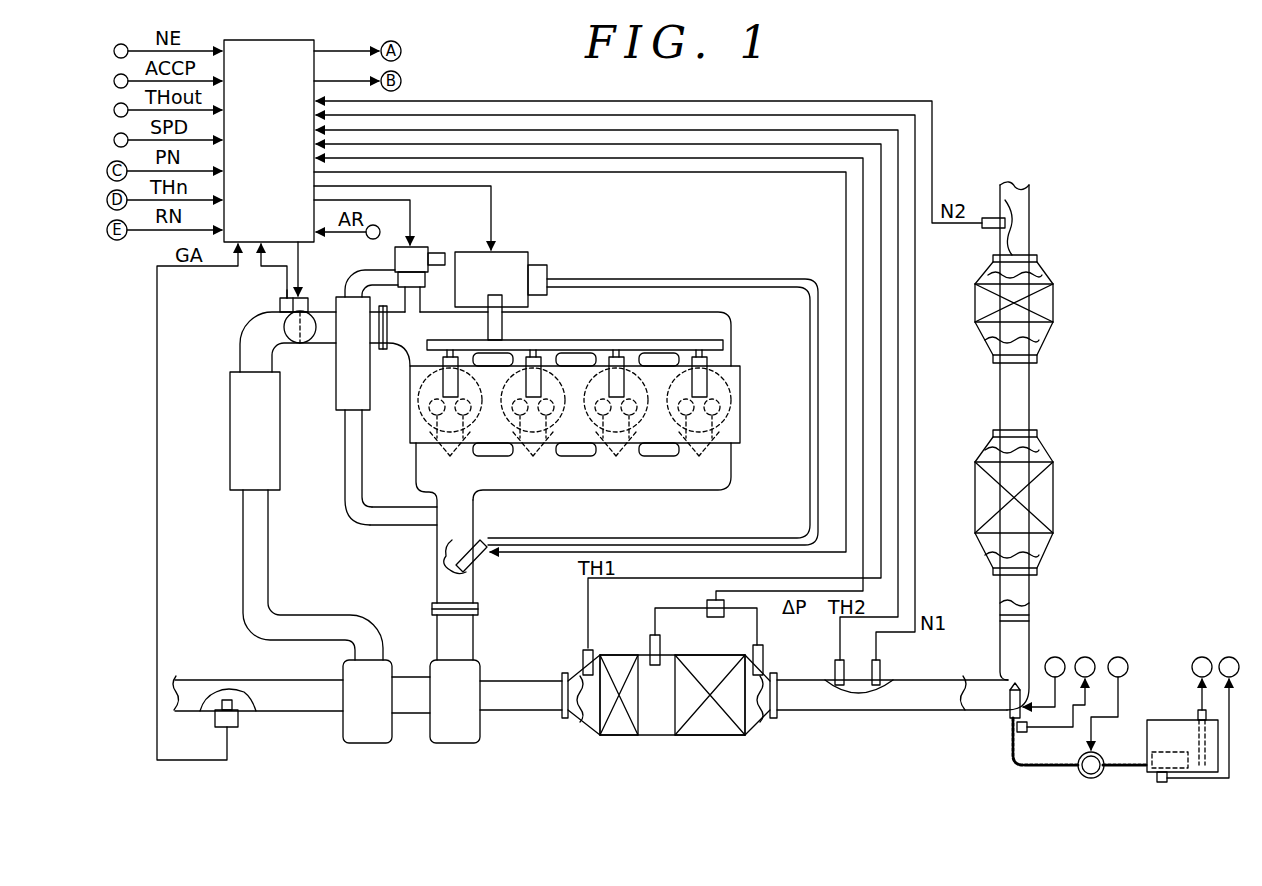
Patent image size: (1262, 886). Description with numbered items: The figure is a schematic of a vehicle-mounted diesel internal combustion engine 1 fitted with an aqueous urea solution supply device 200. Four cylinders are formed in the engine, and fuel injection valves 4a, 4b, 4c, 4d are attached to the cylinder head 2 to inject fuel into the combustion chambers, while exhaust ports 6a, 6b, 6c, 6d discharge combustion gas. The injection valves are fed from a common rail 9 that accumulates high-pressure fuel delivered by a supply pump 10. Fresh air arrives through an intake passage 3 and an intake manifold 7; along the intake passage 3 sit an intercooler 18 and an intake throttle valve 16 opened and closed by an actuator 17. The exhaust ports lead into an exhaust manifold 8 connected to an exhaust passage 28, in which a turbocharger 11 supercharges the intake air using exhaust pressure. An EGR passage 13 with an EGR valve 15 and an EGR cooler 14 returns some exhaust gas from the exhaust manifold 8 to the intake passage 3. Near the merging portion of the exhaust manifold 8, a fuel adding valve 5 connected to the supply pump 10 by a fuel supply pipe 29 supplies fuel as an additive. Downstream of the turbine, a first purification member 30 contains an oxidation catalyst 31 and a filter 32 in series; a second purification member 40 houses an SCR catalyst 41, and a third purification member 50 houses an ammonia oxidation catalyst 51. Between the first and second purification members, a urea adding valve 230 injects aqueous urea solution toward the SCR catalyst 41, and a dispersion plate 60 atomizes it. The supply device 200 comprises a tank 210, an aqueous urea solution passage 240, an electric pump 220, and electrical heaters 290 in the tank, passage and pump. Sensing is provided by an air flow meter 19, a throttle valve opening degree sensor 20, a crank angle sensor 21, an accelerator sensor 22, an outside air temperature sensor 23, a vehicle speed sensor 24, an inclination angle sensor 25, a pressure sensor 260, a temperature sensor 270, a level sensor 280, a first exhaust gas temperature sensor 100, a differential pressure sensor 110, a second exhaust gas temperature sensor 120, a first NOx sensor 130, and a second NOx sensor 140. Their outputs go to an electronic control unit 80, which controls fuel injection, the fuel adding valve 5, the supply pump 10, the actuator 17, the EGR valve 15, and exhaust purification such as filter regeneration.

The internal combustion engine 1 is at (580, 412).
The cylinder head 2 is at (410, 431).
The intake passage 3 is at (240, 358).
The fuel injection valve 4a is at (450, 348).
The fuel injection valve 4b is at (533, 348).
The fuel injection valve 4c is at (616, 348).
The fuel injection valve 4d is at (699, 348).
The fuel adding valve 5 is at (480, 562).
The exhaust port 6a is at (450, 458).
The exhaust port 6b is at (533, 458).
The exhaust port 6c is at (616, 458).
The exhaust port 6d is at (699, 458).
The intake manifold 7 is at (733, 332).
The exhaust manifold 8 is at (655, 492).
The common rail 9 is at (646, 338).
The supply pump 10 is at (500, 250).
The turbocharger 11 is at (454, 745).
The EGR passage 13 is at (345, 474).
The EGR cooler 14 is at (336, 392).
The EGR valve 15 is at (419, 243).
The intake throttle valve 16 is at (286, 333).
The actuator 17 is at (312, 298).
The intercooler 18 is at (230, 431).
The air flow meter 19 is at (240, 720).
The throttle valve opening degree sensor 20 is at (280, 304).
The crank angle sensor 21 is at (113, 51).
The accelerator sensor 22 is at (113, 81).
The outside air temperature sensor 23 is at (113, 110).
The vehicle speed sensor 24 is at (113, 140).
The inclination angle sensor 25 is at (370, 238).
The exhaust passage 28 is at (1031, 225).
The fuel supply pipe 29 is at (704, 276).
The first purification member 30 is at (669, 722).
The oxidation catalyst 31 is at (620, 740).
The filter 32 is at (712, 740).
The second purification member 40 is at (1043, 502).
The SCR catalyst 41 is at (1054, 485).
The third purification member 50 is at (1039, 309).
The ammonia oxidation catalyst 51 is at (1054, 302).
The dispersion plate 60 is at (1031, 620).
The electronic control unit 80 is at (314, 42).
The first exhaust gas temperature sensor 100 is at (595, 655).
The differential pressure sensor 110 is at (706, 606).
The second exhaust gas temperature sensor 120 is at (834, 670).
The first NOx sensor 130 is at (882, 665).
The second NOx sensor 140 is at (984, 217).
The aqueous urea solution supply device 200 is at (1093, 702).
The tank 210 is at (1168, 712).
The electric pump 220 is at (1093, 781).
The urea adding valve 230 is at (1008, 718).
The aqueous urea solution passage 240 is at (1010, 741).
The pressure sensor 260 is at (1027, 731).
The temperature sensor 270 is at (1166, 782).
The level sensor 280 is at (1196, 708).
The electrical heater 290 is at (1144, 753).